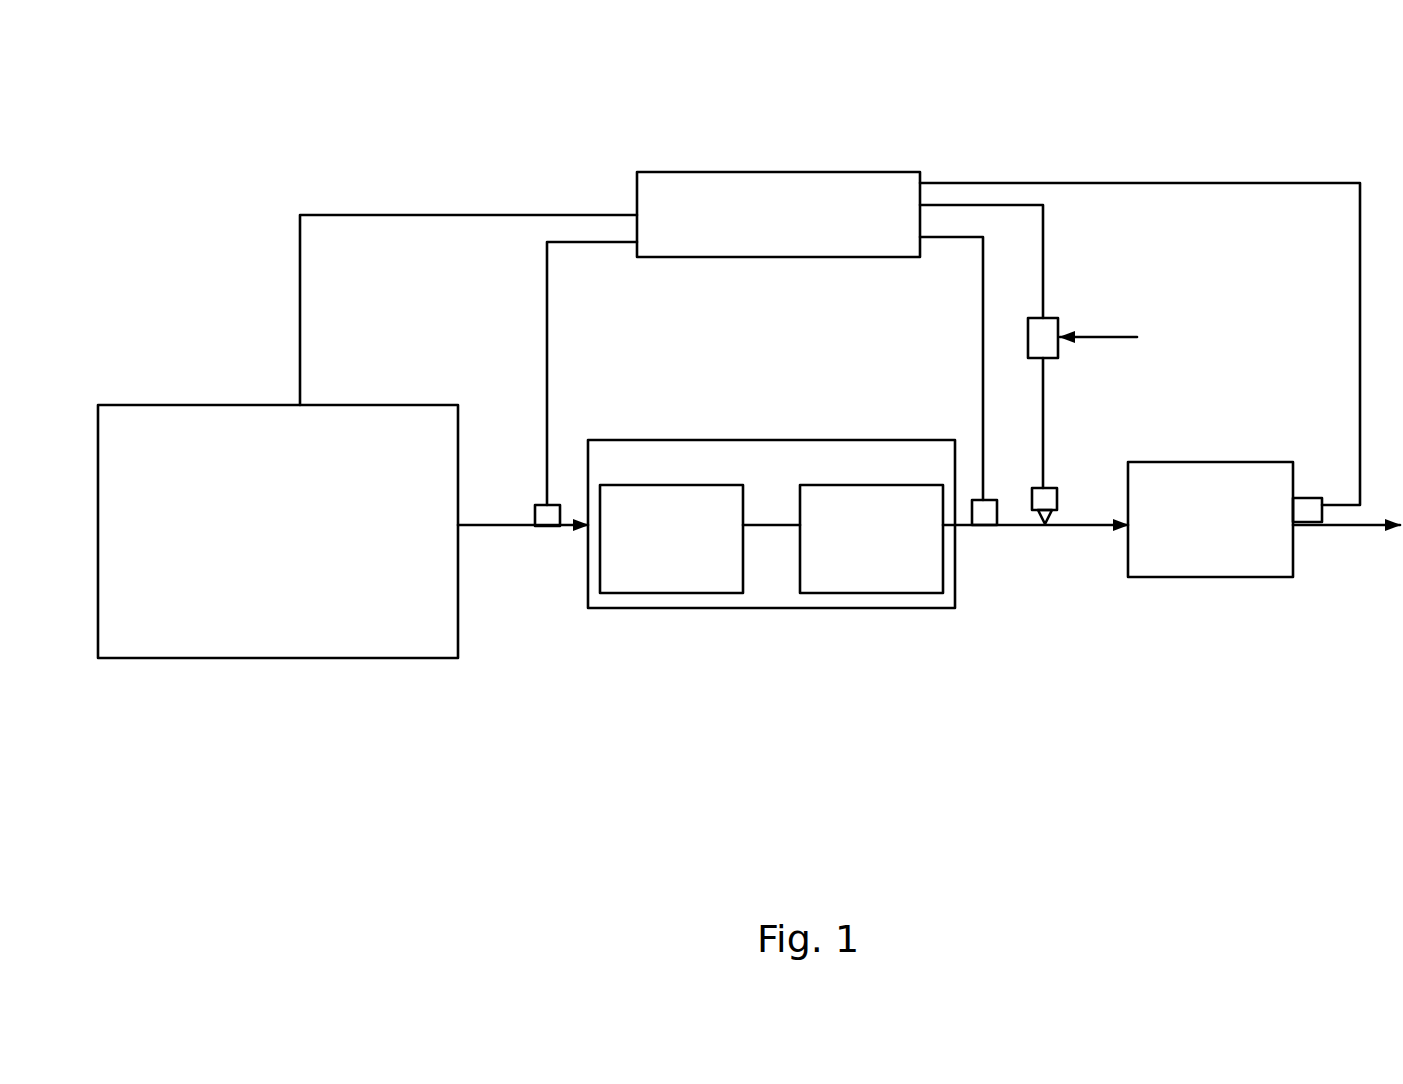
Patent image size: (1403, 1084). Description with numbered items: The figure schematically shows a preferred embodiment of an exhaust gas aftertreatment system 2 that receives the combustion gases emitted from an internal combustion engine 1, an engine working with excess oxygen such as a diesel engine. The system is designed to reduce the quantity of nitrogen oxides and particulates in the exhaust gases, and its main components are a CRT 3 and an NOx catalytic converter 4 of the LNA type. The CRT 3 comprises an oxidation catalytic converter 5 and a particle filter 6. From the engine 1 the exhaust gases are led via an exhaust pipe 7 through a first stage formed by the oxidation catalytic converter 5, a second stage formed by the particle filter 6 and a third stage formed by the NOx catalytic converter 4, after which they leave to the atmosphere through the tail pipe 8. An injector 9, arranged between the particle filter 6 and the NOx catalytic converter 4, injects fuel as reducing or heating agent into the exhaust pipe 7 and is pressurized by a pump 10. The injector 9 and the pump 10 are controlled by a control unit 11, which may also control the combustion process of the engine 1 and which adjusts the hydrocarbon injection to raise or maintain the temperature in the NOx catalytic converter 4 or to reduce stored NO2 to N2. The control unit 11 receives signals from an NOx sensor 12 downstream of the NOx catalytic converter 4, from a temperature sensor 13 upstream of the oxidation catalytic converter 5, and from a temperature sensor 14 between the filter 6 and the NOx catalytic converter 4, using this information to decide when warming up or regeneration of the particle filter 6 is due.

The internal combustion engine 1 is at (182, 405).
The exhaust gas aftertreatment system 2 is at (450, 130).
The CRT 3 is at (612, 608).
The NOx catalytic converter 4 is at (1175, 577).
The oxidation catalytic converter 5 is at (723, 593).
The particle filter 6 is at (917, 593).
The exhaust pipe 7 is at (508, 527).
The tail pipe 8 is at (1333, 527).
The injector 9 is at (1060, 527).
The pump 10 is at (1060, 318).
The control unit 11 is at (740, 172).
The NOx sensor 12 is at (1312, 498).
The temperature sensor 13 is at (545, 515).
The temperature sensor 14 is at (983, 527).